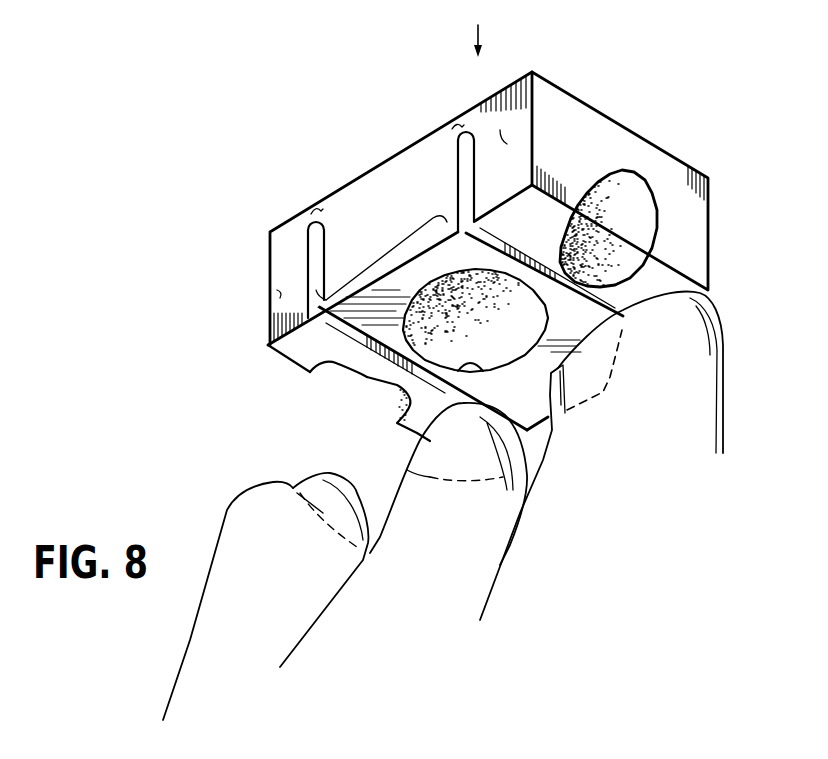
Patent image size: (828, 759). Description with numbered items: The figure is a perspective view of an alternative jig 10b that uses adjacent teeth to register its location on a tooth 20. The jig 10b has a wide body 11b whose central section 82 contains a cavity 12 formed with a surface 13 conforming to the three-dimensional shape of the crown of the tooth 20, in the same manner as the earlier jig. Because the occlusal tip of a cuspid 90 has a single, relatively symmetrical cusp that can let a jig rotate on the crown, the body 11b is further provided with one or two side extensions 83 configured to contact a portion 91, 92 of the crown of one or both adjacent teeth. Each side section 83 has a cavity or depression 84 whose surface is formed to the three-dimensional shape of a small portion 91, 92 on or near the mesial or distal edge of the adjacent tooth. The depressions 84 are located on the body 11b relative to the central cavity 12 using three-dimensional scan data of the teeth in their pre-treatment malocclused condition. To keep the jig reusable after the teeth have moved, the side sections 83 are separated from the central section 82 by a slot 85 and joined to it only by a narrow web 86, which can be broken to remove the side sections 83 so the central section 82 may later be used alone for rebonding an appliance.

The jig 10b is at (664, 147).
The wide body 11b is at (378, 164).
The cavity 12 is at (487, 372).
The surface 13 is at (502, 357).
The tooth 20 is at (523, 480).
The central section 82 is at (392, 251).
The side extension 83 is at (507, 144).
The depression 84 is at (615, 222).
The slot 85 is at (470, 172).
The narrow web 86 is at (455, 128).
The cuspid 90 is at (457, 483).
The portion of crown of adjacent tooth 91 is at (616, 366).
The portion of crown of adjacent tooth 92 is at (325, 537).